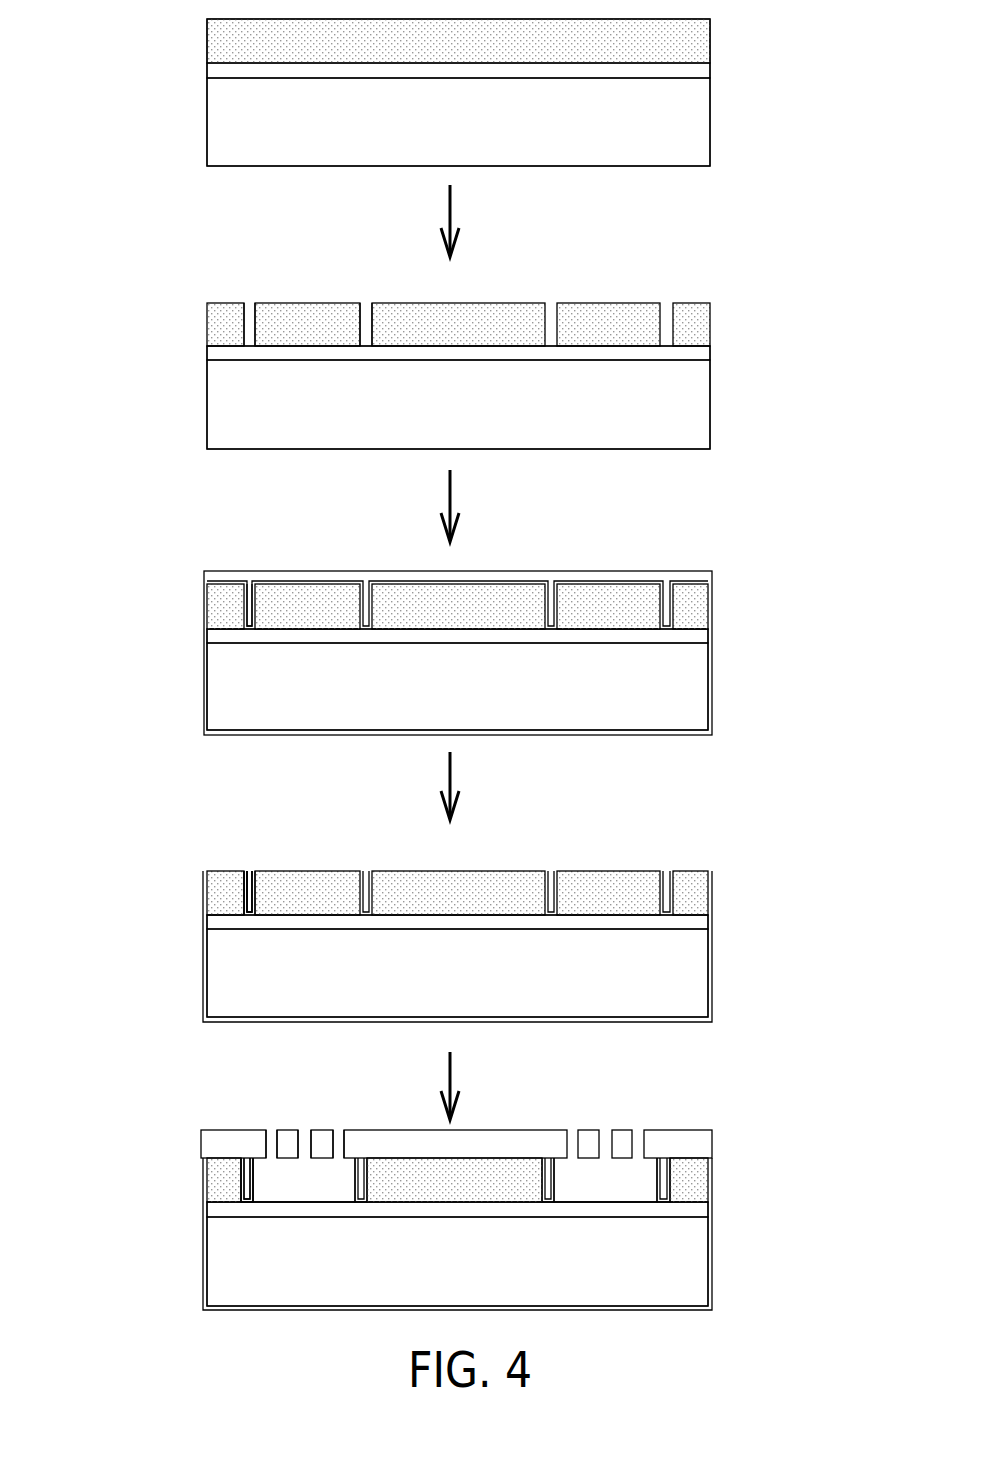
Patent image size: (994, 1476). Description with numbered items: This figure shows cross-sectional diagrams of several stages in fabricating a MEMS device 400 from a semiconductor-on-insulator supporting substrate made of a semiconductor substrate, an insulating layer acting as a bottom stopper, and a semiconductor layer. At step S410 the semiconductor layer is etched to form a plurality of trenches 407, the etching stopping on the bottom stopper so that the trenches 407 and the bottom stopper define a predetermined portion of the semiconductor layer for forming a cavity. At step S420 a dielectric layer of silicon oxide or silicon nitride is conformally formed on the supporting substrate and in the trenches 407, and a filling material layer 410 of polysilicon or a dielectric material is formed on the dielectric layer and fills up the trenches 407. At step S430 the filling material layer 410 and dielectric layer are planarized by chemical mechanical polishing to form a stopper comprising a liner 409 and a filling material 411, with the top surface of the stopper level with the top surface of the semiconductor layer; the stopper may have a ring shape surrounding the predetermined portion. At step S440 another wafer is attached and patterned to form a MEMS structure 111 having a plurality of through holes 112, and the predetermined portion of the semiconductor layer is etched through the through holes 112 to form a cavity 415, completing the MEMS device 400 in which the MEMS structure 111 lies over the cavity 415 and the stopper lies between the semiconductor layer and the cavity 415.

The MEMS structure 111 is at (190, 1147).
The through holes 112 is at (345, 1103).
The MEMS device 400 is at (722, 1108).
The trenches 407 is at (250, 325).
The liner 409 is at (241, 895).
The filling material layer 410 is at (250, 581).
The filling material 411 is at (248, 885).
The cavity 415 is at (310, 1178).
The step of etching trenches S410 is at (452, 213).
The step of forming dielectric and filling material layers S420 is at (452, 498).
The step of planarizing S430 is at (452, 777).
The step of forming MEMS structure and cavity S440 is at (452, 1078).